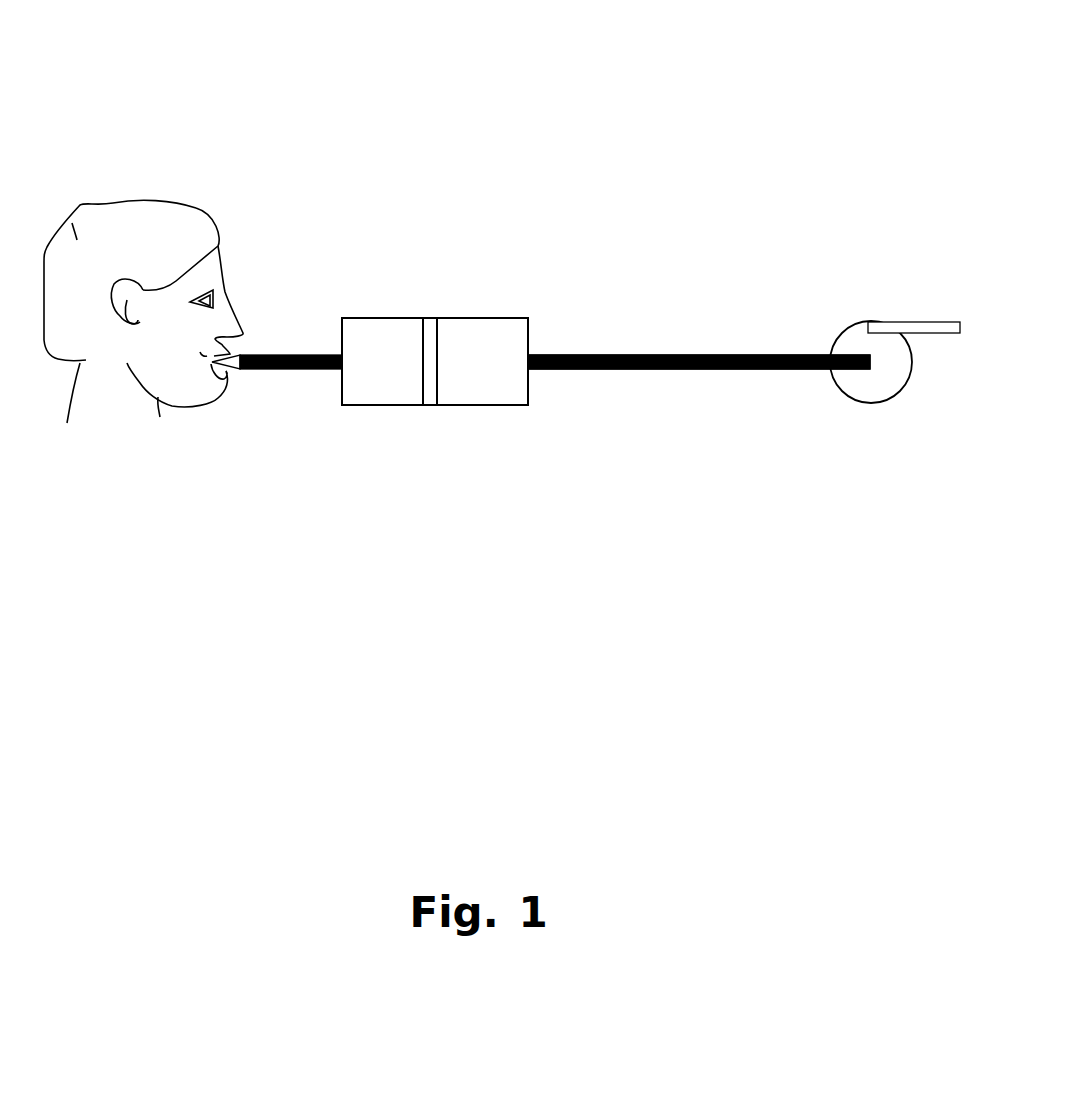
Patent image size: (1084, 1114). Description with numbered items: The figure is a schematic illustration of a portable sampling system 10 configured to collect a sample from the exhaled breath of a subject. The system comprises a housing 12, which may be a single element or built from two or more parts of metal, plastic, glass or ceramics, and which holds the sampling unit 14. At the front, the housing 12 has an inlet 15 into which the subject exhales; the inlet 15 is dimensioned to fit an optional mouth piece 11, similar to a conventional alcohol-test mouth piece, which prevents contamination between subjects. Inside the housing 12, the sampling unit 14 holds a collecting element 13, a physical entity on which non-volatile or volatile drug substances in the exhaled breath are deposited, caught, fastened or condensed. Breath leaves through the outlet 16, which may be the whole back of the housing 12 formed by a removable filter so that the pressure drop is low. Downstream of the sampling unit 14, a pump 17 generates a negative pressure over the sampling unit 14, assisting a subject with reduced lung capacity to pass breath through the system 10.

The portable sampling system 10 is at (400, 218).
The mouth piece 11 is at (253, 389).
The housing 12 is at (376, 303).
The collecting element 13 is at (431, 308).
The sampling unit 14 is at (448, 337).
The inlet 15 is at (334, 389).
The outlet 16 is at (541, 374).
The pump 17 is at (860, 402).